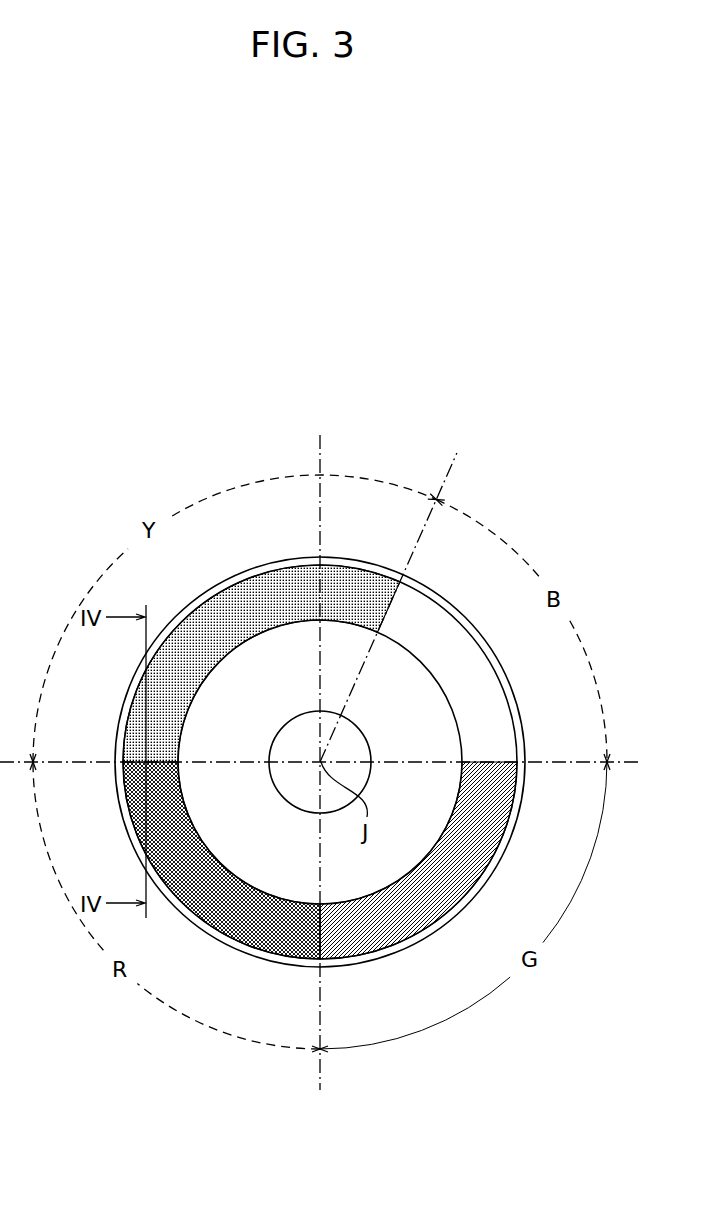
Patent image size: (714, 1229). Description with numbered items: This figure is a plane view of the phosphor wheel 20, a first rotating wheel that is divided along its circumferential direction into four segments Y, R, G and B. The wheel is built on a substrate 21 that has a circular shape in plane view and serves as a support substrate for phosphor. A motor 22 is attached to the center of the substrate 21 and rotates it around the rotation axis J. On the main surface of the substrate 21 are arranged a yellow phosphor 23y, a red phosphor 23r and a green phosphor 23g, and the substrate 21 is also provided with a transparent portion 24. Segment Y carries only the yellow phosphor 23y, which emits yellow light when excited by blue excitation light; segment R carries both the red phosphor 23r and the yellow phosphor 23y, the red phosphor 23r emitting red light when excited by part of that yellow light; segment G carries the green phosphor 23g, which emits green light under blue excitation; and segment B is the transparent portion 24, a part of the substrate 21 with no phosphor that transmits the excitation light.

The phosphor wheel 20 is at (349, 711).
The substrate 21 is at (358, 565).
The motor 22 is at (285, 730).
The yellow phosphor 23y is at (255, 596).
The red phosphor 23r is at (230, 918).
The green phosphor 23g is at (390, 931).
The transparent portion 24 is at (489, 674).